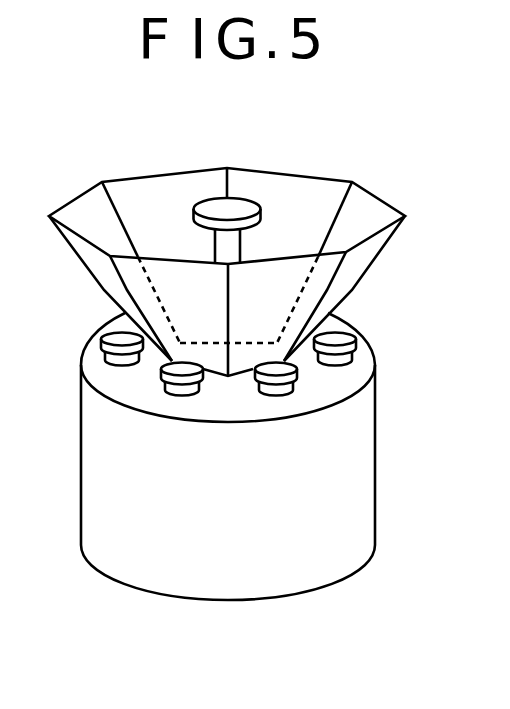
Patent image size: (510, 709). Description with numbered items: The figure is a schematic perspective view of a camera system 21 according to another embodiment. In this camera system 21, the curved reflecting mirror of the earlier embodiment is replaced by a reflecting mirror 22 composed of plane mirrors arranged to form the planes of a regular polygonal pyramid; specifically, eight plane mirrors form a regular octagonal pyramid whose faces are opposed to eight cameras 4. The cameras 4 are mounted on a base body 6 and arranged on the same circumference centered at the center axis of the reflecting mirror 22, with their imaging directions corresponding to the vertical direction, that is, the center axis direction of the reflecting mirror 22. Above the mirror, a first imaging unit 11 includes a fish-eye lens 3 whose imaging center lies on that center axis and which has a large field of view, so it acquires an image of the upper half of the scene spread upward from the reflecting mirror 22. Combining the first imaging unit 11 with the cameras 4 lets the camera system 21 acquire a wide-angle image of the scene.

The fish-eye lens 3 is at (222, 208).
The camera 4 is at (102, 342).
The base body 6 is at (367, 443).
The first imaging unit 11 is at (266, 198).
The camera system 21 is at (242, 661).
The reflecting mirror 22 is at (370, 192).